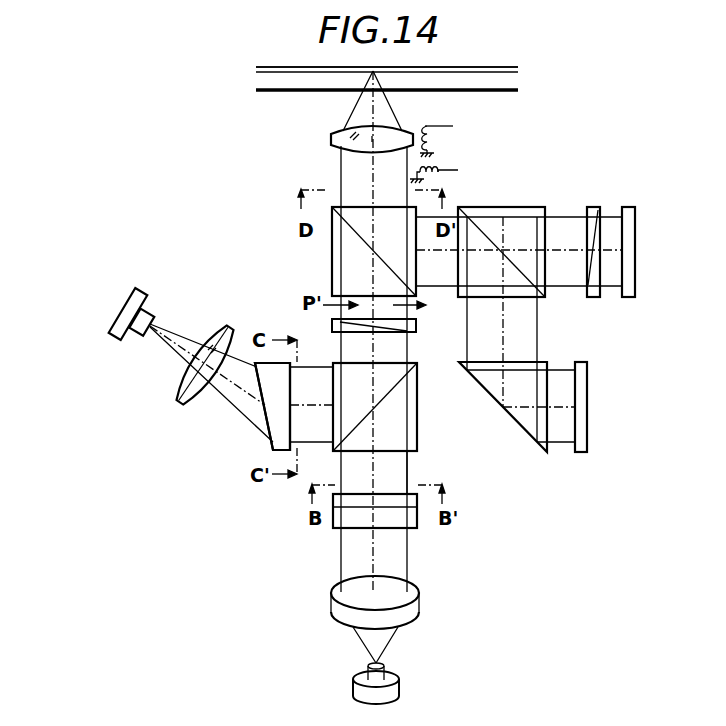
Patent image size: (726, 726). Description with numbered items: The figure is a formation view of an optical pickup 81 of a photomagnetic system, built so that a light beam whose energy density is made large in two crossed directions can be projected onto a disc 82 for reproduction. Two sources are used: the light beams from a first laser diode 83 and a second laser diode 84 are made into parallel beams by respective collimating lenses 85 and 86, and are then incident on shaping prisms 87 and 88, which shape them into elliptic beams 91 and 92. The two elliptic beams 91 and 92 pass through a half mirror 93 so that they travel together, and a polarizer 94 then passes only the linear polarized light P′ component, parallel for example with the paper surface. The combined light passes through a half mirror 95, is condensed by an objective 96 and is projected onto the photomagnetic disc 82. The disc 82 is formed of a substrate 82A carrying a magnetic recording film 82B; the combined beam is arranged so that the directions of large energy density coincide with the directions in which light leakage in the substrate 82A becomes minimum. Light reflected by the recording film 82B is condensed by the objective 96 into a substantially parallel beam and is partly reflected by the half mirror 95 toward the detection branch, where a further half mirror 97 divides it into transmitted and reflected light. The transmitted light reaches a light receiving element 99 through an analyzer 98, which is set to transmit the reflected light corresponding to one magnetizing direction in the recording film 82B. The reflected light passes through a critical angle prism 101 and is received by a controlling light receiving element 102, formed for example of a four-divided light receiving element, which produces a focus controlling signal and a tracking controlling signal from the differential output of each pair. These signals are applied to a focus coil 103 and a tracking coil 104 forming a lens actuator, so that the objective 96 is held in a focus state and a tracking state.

The optical pickup 81 is at (258, 234).
The photomagnetic disc 82 is at (244, 77).
The substrate 82A is at (470, 90).
The magnetic recording film 82B is at (493, 68).
The first laser diode 83 is at (398, 687).
The second laser diode 84 is at (138, 293).
The collimating lens 85 is at (420, 596).
The collimating lens 86 is at (182, 398).
The shaping prism 87 is at (417, 528).
The shaping prism 88 is at (273, 445).
The elliptic beam 91 is at (410, 474).
The elliptic beam 92 is at (300, 372).
The half mirror 93 is at (418, 412).
The polarizer 94 is at (416, 322).
The half mirror 95 is at (332, 253).
The objective 96 is at (331, 139).
The half mirror 97 is at (521, 207).
The analyzer 98 is at (593, 207).
The light receiving element 99 is at (628, 207).
The critical angle prism 101 is at (515, 430).
The controlling light receiving element 102 is at (582, 454).
The focus coil 103 is at (430, 137).
The tracking coil 104 is at (438, 174).